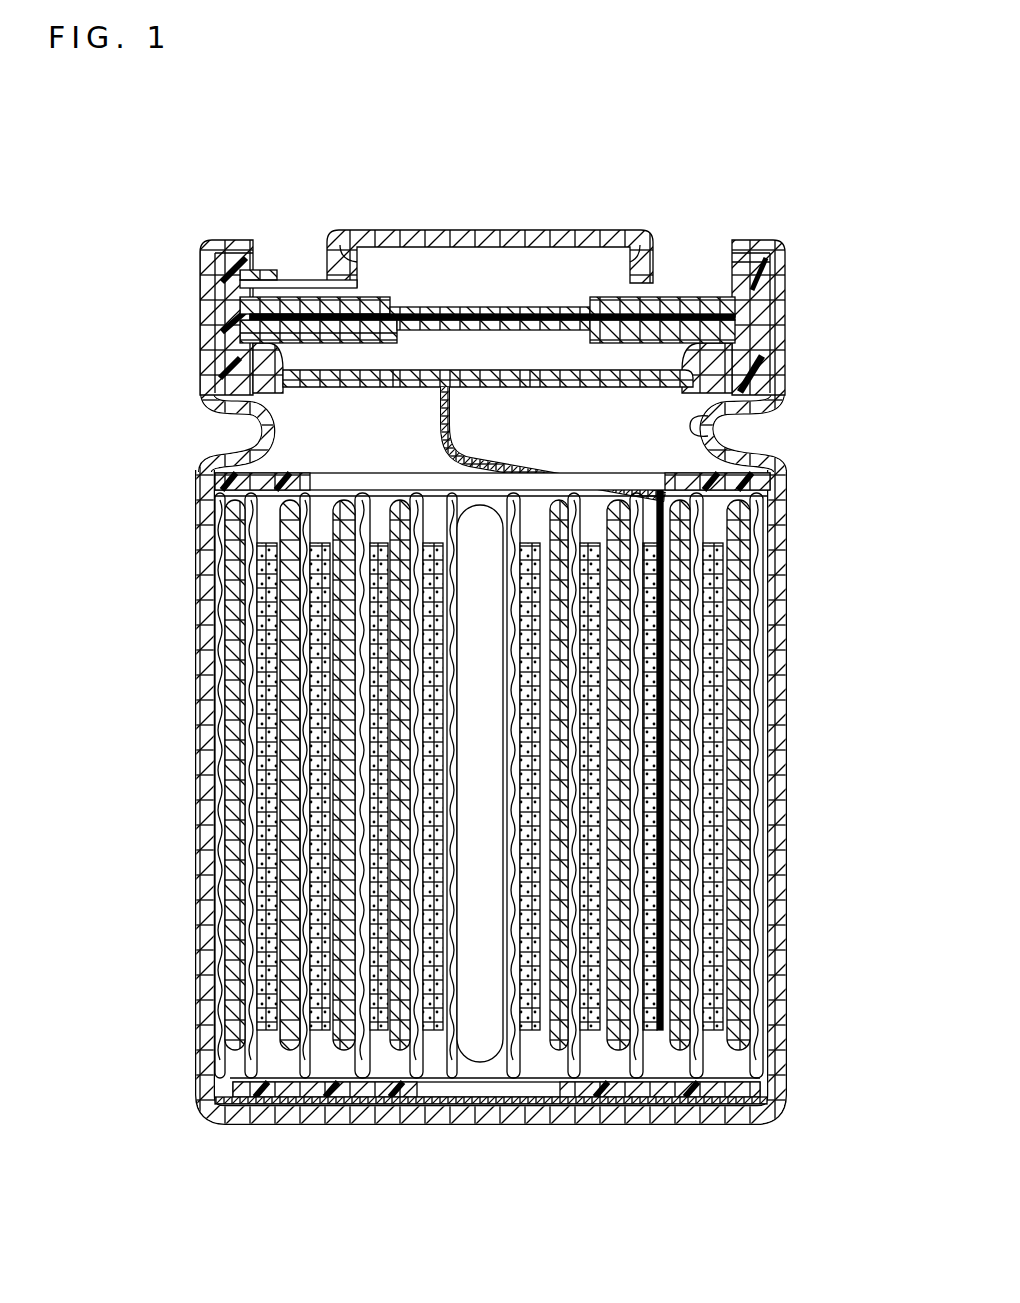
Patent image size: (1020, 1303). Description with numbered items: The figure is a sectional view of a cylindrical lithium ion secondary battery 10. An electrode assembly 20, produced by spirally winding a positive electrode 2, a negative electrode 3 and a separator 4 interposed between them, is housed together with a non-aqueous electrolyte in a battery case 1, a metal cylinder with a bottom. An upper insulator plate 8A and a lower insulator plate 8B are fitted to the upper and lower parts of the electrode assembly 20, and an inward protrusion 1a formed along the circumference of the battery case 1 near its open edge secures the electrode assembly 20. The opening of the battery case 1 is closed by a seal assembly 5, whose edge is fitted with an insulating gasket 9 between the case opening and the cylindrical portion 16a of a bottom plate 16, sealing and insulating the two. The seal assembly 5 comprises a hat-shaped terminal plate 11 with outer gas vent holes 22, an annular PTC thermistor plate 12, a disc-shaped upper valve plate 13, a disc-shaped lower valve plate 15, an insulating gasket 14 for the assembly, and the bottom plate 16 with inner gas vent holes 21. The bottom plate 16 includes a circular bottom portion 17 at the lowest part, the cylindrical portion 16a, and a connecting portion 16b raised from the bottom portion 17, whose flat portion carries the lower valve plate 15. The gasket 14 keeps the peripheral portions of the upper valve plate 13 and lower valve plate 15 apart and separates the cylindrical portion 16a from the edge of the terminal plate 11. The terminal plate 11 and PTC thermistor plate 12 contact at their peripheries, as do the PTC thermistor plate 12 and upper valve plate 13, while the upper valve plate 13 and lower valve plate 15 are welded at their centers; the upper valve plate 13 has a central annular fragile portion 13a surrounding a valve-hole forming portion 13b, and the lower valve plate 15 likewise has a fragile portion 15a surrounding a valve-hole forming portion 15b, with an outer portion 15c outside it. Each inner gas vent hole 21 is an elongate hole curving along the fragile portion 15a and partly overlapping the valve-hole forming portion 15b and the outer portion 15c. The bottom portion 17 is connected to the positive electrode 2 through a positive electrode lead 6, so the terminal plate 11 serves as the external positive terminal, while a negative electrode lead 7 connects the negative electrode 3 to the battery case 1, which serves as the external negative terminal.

The battery case 1 is at (205, 620).
The protrusion 1a is at (712, 420).
The positive electrode 2 is at (722, 896).
The negative electrode 3 is at (745, 822).
The separator 4 is at (760, 660).
The seal assembly 5 is at (498, 188).
The positive electrode lead 6 is at (500, 455).
The negative electrode lead 7 is at (510, 1103).
The upper insulator plate 8A is at (750, 483).
The lower insulator plate 8B is at (748, 1090).
The insulating gasket 9 is at (748, 262).
The battery 10 is at (697, 145).
The terminal plate 11 is at (590, 236).
The PTC thermistor plate 12 is at (302, 290).
The upper valve plate 13 is at (748, 300).
The fragile portion 13a is at (400, 305).
The valve-hole forming portion 13b is at (465, 310).
The gasket for the assembly 14 is at (755, 320).
The lower valve plate 15 is at (755, 338).
The fragile portion 15a is at (400, 342).
The valve-hole forming portion 15b is at (525, 330).
The outer portion 15c is at (215, 370).
The bottom plate 16 is at (655, 392).
The cylindrical portion 16a is at (215, 298).
The connecting portion 16b is at (760, 366).
The bottom portion 17 is at (250, 418).
The electrode assembly 20 is at (768, 759).
The inner gas vent holes 21 is at (420, 385).
The outer gas vent holes 22 is at (345, 240).